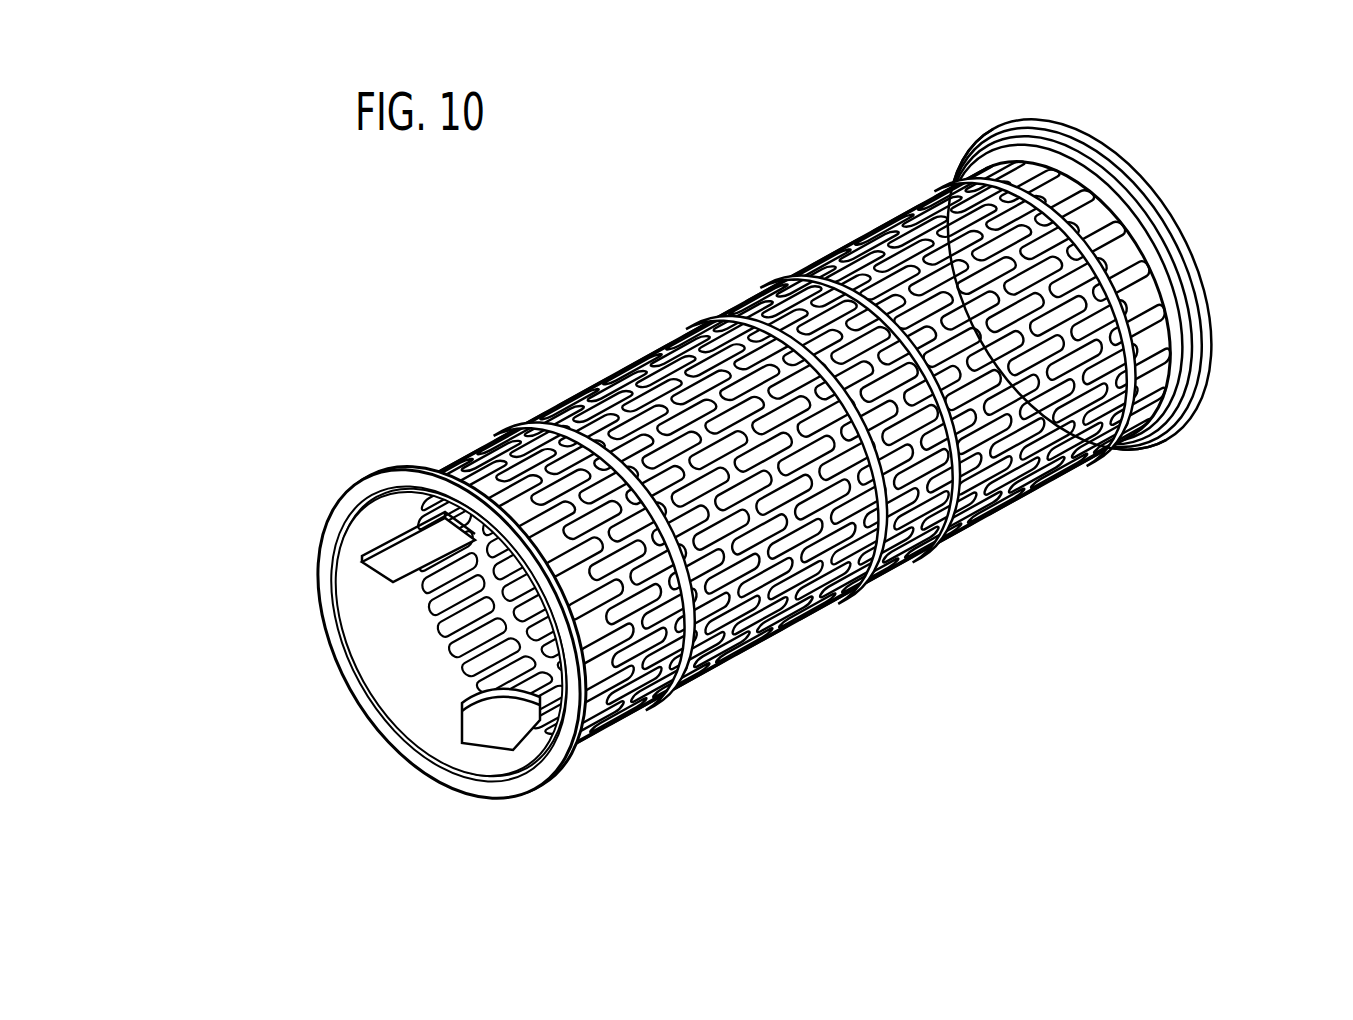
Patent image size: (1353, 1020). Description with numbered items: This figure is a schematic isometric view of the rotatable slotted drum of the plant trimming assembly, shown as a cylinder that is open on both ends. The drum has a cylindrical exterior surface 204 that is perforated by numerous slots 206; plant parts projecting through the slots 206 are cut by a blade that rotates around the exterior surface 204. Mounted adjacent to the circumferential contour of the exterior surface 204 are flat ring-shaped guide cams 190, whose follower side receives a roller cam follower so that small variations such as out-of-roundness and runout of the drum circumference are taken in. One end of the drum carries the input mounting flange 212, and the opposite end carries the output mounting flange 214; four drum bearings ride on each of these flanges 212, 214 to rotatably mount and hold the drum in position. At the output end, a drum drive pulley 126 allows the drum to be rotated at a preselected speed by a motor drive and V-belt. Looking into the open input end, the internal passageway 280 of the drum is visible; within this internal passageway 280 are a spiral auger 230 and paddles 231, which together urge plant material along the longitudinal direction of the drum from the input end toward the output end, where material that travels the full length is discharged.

The drum drive pulley 126 is at (1000, 135).
The guide cam 190 is at (650, 648).
The cylindrical exterior surface 204 is at (1017, 433).
The slots 206 is at (813, 552).
The input mounting flange 212 is at (692, 502).
The output mounting flange 214 is at (1207, 395).
The spiral auger 230 is at (477, 683).
The paddles 231 is at (397, 557).
The internal passageway 280 is at (407, 665).